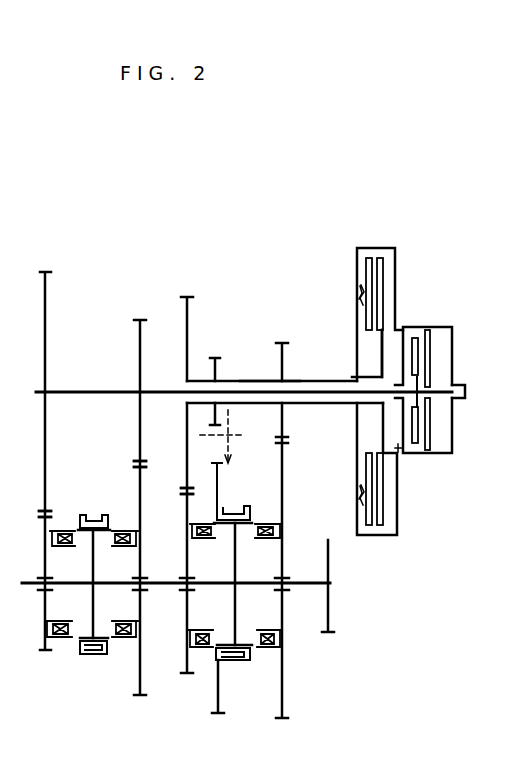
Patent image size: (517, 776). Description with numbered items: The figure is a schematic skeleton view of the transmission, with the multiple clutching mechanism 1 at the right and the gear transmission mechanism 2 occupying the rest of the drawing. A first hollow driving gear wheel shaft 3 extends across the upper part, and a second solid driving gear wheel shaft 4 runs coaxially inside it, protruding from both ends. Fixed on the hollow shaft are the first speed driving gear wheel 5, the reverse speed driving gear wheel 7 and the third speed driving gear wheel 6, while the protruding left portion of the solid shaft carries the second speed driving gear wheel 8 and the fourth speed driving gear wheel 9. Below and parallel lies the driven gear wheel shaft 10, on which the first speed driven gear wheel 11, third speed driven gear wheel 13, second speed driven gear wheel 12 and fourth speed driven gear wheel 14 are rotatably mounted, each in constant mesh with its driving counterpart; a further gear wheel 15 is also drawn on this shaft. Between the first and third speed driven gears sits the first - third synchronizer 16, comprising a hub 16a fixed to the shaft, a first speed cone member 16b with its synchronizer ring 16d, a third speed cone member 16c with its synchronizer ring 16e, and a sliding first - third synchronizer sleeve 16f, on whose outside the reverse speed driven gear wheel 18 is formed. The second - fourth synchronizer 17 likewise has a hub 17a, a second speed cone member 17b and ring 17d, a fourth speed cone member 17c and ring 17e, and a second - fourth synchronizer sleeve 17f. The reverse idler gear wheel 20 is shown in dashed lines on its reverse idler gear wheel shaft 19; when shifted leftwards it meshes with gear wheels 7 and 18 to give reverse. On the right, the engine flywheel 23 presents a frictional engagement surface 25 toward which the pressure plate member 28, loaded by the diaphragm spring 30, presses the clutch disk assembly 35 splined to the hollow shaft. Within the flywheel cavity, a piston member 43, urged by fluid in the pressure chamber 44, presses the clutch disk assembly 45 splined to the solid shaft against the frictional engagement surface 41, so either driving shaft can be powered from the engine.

The multiple clutching mechanism 1 is at (345, 247).
The gear transmission mechanism 2 is at (215, 292).
The first hollow driving gear wheel shaft 3 is at (265, 381).
The second solid driving gear wheel shaft 4 is at (85, 392).
The first speed driving gear wheel 5 is at (282, 365).
The third speed driving gear wheel 6 is at (187, 305).
The reverse speed driving gear wheel 7 is at (215, 372).
The second speed driving gear wheel 8 is at (140, 340).
The fourth speed driving gear wheel 9 is at (45, 312).
The driven gear wheel shaft 10 is at (303, 583).
The first speed driven gear wheel 11 is at (282, 465).
The second speed driven gear wheel 12 is at (140, 487).
The third speed driven gear wheel 13 is at (187, 517).
The fourth speed driven gear wheel 14 is at (45, 540).
The gear 15 is at (328, 566).
The first - third synchronizer 16 is at (249, 680).
The hub 16a is at (235, 607).
The first speed cone member 16b is at (263, 548).
The third speed cone member 16c is at (205, 548).
The synchronizer ring 16d is at (261, 528).
The synchronizer ring 16e is at (205, 528).
The first - third synchronizer sleeve 16f is at (230, 508).
The second - fourth synchronizer 17 is at (91, 662).
The hub 17a is at (93, 607).
The second speed cone member 17b is at (120, 548).
The fourth speed cone member 17c is at (62, 548).
The synchronizer ring 17d is at (118, 532).
The synchronizer ring 17e is at (68, 532).
The second - fourth synchronizer sleeve 17f is at (90, 515).
The reverse speed driven gear wheel 18 is at (204, 433).
The reverse idler gear wheel shaft 19 is at (235, 433).
The reverse idler gear wheel 20 is at (230, 461).
The engine flywheel 23 is at (440, 327).
The frictional engagement surface 25 is at (395, 282).
The pressure plate member 28 is at (366, 275).
The diaphragm spring 30 is at (360, 300).
The clutch disk assembly 35 is at (380, 365).
The frictional engagement surface 41 is at (403, 448).
The piston member 43 is at (425, 438).
The pressure chamber 44 is at (440, 418).
The clutch disk assembly 45 is at (420, 378).